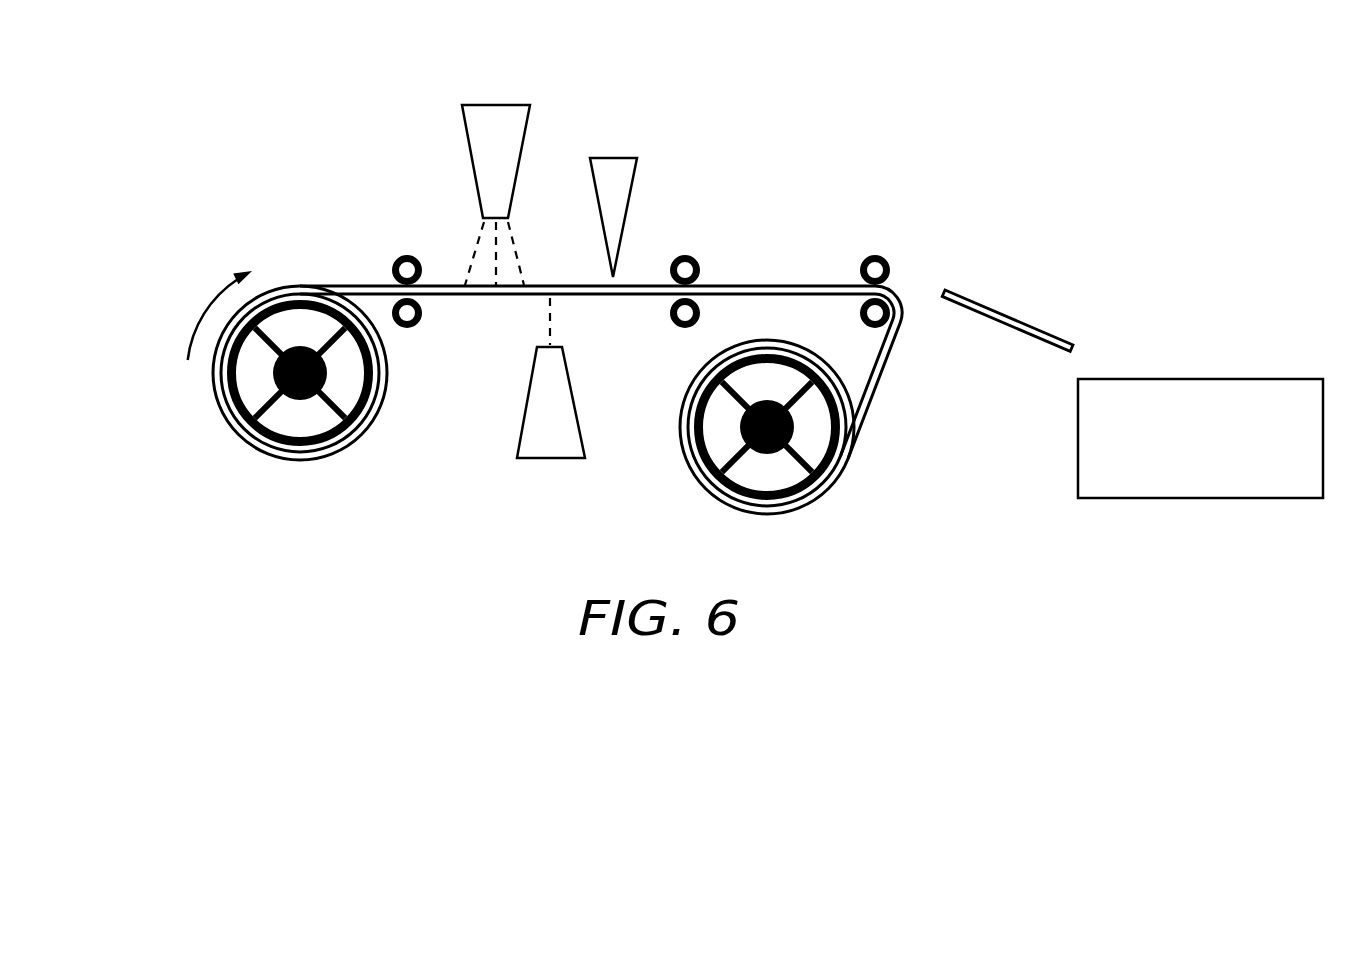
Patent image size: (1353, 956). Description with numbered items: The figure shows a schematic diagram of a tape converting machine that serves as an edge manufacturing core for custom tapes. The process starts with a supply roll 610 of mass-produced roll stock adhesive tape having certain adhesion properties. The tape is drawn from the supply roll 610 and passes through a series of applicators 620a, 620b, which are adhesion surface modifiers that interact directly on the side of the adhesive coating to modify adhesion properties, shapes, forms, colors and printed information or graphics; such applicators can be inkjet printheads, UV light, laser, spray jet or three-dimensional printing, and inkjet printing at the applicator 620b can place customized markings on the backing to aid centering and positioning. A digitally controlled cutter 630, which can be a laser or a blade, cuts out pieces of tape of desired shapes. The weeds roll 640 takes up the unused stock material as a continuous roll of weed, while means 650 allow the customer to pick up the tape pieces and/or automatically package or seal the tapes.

The supply roll 610 is at (190, 398).
The applicator 620a is at (470, 157).
The applicator 620b is at (525, 413).
The cutter 630 is at (632, 185).
The weeds roll 640 is at (850, 480).
The means for picking up and/or packaging 650 is at (1203, 375).